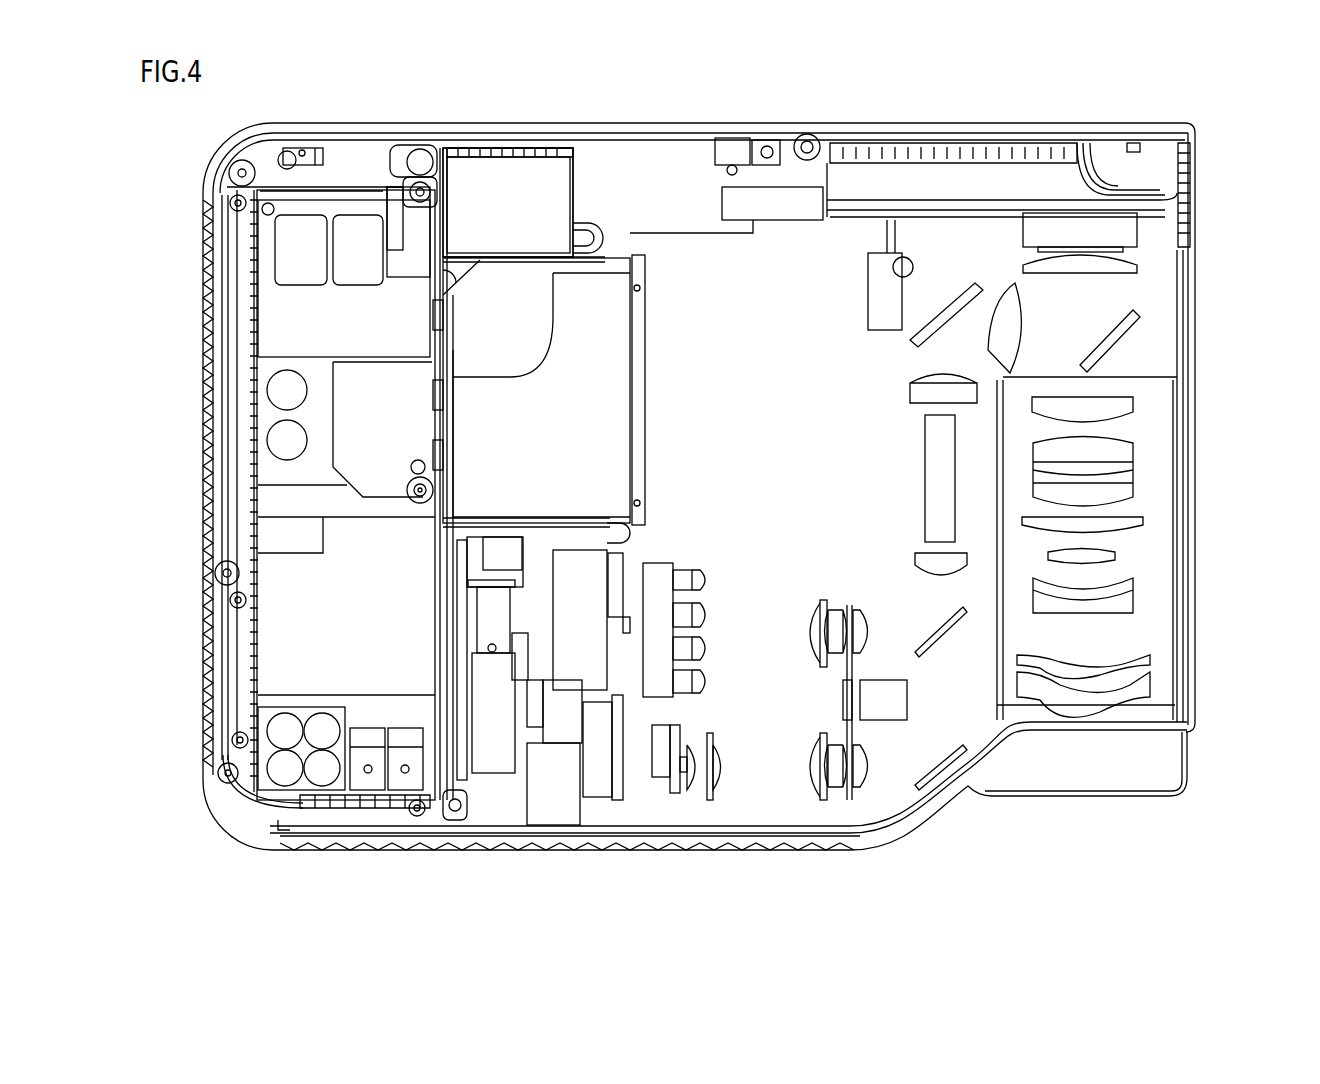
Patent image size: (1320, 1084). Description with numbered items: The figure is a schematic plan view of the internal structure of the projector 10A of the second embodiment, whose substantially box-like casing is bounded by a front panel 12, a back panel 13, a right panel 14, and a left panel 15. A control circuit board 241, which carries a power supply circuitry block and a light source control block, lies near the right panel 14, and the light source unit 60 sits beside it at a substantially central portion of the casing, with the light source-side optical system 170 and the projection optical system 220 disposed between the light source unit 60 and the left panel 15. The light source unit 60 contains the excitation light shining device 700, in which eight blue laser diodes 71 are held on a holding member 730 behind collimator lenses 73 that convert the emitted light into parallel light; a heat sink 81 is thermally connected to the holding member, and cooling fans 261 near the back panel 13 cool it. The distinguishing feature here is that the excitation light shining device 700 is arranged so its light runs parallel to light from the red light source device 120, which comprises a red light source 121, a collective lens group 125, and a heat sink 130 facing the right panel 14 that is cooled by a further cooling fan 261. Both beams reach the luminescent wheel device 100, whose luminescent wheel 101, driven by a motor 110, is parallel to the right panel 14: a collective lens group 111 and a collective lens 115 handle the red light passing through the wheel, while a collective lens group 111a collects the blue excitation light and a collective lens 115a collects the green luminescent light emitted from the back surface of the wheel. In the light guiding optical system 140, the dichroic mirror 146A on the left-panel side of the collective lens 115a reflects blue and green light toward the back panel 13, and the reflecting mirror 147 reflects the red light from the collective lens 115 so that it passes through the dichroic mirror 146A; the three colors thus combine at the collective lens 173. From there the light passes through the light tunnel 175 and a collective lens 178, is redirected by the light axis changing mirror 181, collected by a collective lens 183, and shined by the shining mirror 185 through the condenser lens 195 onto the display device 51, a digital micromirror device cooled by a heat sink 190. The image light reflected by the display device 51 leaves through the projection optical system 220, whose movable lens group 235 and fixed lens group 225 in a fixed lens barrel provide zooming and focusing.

The projector 10A is at (750, 453).
The front panel 12 is at (705, 837).
The back panel 13 is at (700, 128).
The right panel 14 is at (183, 491).
The left panel 15 is at (1237, 429).
The display device 51 is at (1157, 206).
The light source unit 60 is at (358, 443).
The blue laser diodes 71 is at (692, 603).
The collimator lenses 73 is at (725, 603).
The heat sink 81 is at (539, 431).
The luminescent wheel device 100 is at (986, 817).
The luminescent wheel 101 is at (869, 851).
The motor 110 is at (959, 827).
The collective lens group 111 is at (798, 759).
The collective lens group 111a is at (794, 641).
The collective lens 115 is at (918, 844).
The collective lens 115a is at (845, 656).
The red light source device 120 is at (650, 838).
The red light source 121 is at (700, 828).
The collective lens group 125 is at (730, 842).
The heat sink 130 is at (563, 724).
The light guiding optical system 140 is at (1046, 793).
The dichroic mirror 146A is at (921, 619).
The reflecting mirror 147 is at (905, 731).
The light source-side optical system 170 is at (939, 196).
The collective lens 173 is at (1109, 569).
The light tunnel 175 is at (1161, 477).
The collective lens 178 is at (1106, 382).
The light axis changing mirror 181 is at (940, 205).
The collective lens 183 is at (1145, 319).
The shining mirror 185 is at (1191, 341).
The heat sink 190 is at (946, 140).
The condenser lens 195 is at (1163, 240).
The projection optical system 220 is at (1114, 548).
The fixed lens group 225 is at (1098, 765).
The movable lens group 235 is at (1162, 508).
The control circuit board 241 is at (284, 482).
The cooling fan 261 is at (653, 507).
The excitation light shining device 700 is at (785, 512).
The holding member 730 is at (666, 584).